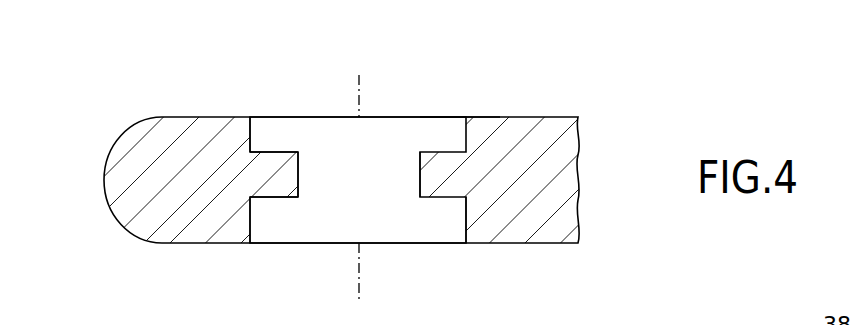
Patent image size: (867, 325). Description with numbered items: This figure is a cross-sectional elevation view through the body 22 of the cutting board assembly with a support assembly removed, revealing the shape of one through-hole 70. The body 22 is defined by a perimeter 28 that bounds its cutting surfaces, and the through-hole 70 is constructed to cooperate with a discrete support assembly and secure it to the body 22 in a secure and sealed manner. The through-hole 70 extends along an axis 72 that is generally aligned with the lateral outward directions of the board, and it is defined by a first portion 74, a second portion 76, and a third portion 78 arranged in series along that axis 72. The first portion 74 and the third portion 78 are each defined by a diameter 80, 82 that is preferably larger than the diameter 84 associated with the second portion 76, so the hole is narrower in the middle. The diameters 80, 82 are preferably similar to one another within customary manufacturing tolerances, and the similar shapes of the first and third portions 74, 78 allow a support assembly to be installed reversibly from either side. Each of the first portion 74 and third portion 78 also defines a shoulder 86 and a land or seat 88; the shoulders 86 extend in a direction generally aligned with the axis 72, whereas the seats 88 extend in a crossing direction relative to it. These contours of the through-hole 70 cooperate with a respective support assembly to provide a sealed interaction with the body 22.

The body 22 is at (547, 117).
The perimeter 28 is at (105, 178).
The through-hole 70 is at (463, 60).
The axis 72 is at (362, 268).
The first portion 74 is at (453, 117).
The second portion 76 is at (407, 178).
The third portion 78 is at (450, 230).
The diameter 80 is at (250, 133).
The diameter 82 is at (466, 221).
The diameter 84 is at (420, 186).
The shoulder 86 is at (265, 232).
The seat 88 is at (275, 152).